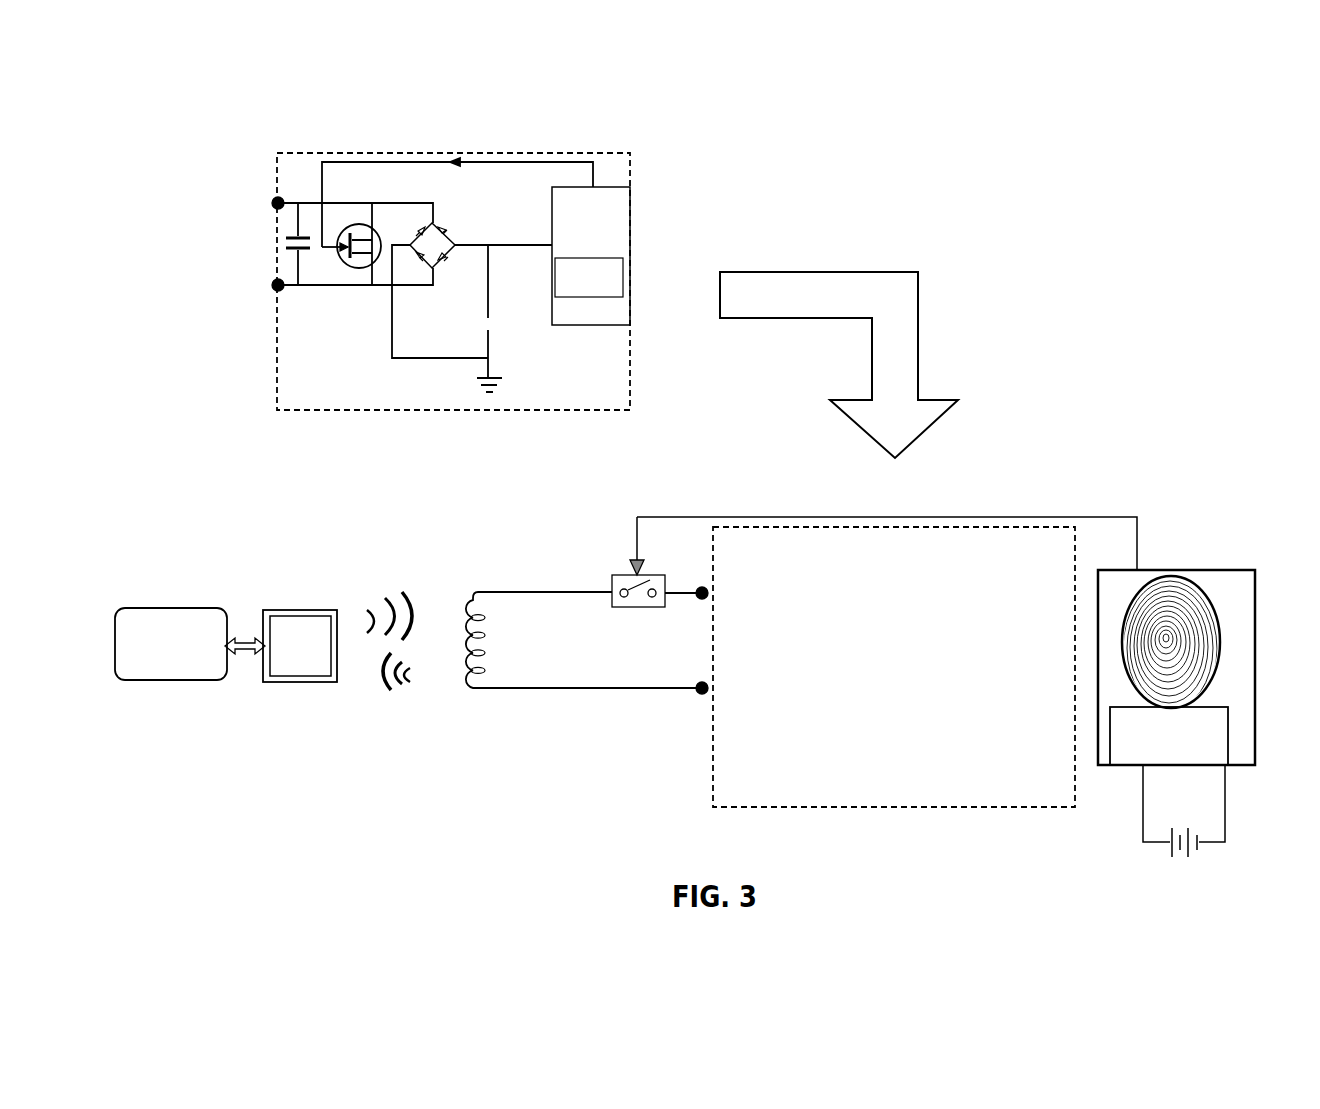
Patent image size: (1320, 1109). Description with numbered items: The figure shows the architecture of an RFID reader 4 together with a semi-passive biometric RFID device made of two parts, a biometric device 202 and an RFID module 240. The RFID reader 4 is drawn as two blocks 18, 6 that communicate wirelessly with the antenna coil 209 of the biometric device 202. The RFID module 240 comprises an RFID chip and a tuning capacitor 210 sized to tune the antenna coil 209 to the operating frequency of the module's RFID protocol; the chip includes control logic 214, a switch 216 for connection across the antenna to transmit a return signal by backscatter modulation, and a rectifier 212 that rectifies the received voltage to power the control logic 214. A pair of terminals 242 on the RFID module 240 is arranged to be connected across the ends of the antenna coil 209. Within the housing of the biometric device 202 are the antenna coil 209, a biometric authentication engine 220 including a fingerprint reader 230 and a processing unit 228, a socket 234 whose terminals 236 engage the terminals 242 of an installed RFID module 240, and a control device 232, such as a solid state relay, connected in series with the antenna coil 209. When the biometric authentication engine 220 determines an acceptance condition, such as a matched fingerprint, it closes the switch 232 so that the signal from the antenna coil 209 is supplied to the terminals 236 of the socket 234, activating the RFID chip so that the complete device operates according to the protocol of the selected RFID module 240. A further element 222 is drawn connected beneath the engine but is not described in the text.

The RFID reader 4 is at (213, 503).
The controller 18 is at (157, 682).
The transceiver module 6 is at (300, 683).
The antenna coil 209 is at (463, 620).
The control device 232 is at (622, 573).
The socket terminals 236 is at (697, 598).
The socket 234 is at (873, 677).
The biometric authentication engine 220 is at (1160, 678).
The fingerprint reader 230 is at (1205, 598).
The processing unit 228 is at (1128, 752).
The battery 222 is at (1202, 830).
The biometric device 202 is at (1062, 378).
The RFID module 240 is at (678, 188).
The terminals 242 is at (273, 208).
The tuning capacitor 210 is at (295, 236).
The switch 216 is at (358, 224).
The rectifier 212 is at (440, 223).
The control logic 214 is at (605, 187).